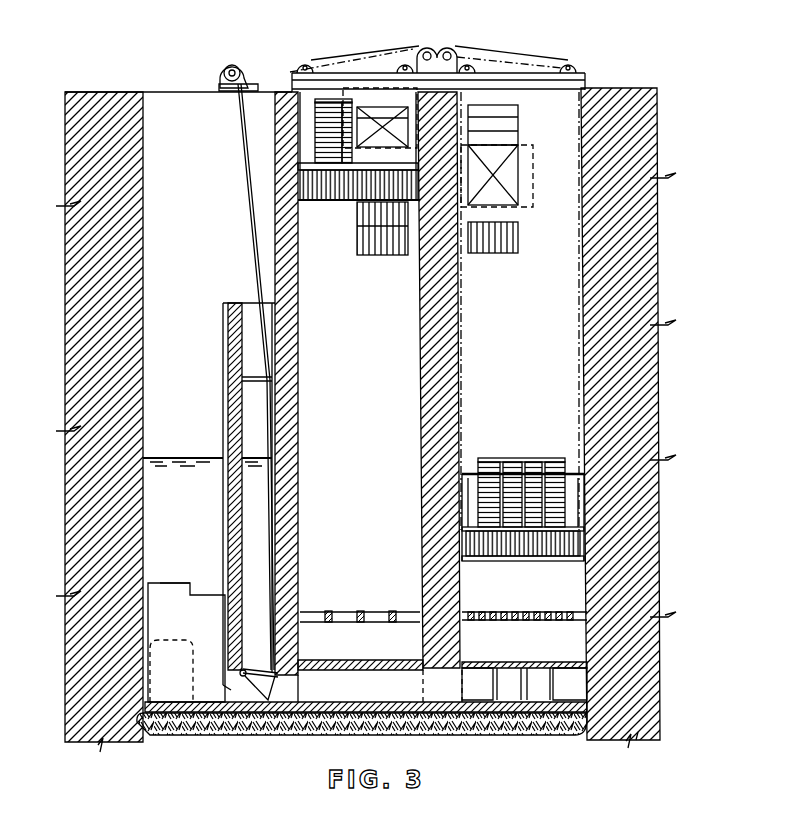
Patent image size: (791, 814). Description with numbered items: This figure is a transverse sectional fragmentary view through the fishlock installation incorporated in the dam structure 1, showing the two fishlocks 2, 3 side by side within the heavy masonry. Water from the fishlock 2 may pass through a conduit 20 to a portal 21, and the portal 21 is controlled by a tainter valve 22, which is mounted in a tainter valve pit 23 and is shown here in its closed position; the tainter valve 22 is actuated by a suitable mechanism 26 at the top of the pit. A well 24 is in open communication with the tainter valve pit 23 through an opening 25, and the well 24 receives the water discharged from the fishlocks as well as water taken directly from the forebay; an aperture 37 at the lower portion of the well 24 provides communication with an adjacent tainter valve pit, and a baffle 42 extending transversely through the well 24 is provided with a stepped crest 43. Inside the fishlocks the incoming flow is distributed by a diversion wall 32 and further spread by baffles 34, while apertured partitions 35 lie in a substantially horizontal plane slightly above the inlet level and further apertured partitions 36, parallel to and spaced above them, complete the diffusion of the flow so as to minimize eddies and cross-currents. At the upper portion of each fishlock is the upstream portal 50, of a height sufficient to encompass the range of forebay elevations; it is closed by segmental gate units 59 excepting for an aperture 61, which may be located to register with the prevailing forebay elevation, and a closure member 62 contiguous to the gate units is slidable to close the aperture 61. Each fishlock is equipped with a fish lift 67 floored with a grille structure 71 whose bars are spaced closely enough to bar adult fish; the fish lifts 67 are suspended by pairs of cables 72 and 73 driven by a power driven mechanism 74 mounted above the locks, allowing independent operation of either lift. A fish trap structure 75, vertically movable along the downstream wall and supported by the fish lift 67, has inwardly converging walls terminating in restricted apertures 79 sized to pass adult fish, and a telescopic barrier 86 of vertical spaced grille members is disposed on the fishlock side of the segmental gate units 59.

The dam structure 1 is at (366, 420).
The fishlock 2 is at (520, 311).
The fishlock 3 is at (358, 238).
The conduit 20 is at (380, 686).
The portal 21 is at (288, 692).
The tainter valve 22 is at (266, 670).
The tainter valve pit 23 is at (249, 494).
The well 24 is at (207, 341).
The opening 25 is at (225, 690).
The mechanism 26 is at (238, 64).
The diversion wall 32 is at (526, 668).
The baffles 34 is at (524, 684).
The apertured partitions 35 is at (338, 660).
The apertured partitions 36 is at (360, 612).
The aperture 37 is at (175, 642).
The baffle 42 is at (186, 642).
The stepped crest 43 is at (209, 592).
The upstream portal 50 is at (410, 104).
The segmental gate units 59 is at (508, 137).
The aperture 61 is at (388, 163).
The closure member 62 is at (493, 175).
The fish lift 67 is at (324, 192).
The grille structure 71 is at (352, 192).
The cables 72 is at (312, 60).
The cables 73 is at (514, 68).
The power driven mechanism 74 is at (437, 64).
The fish trap structure 75 is at (332, 118).
The restricted apertures 79 is at (340, 140).
The barrier 86 is at (376, 250).